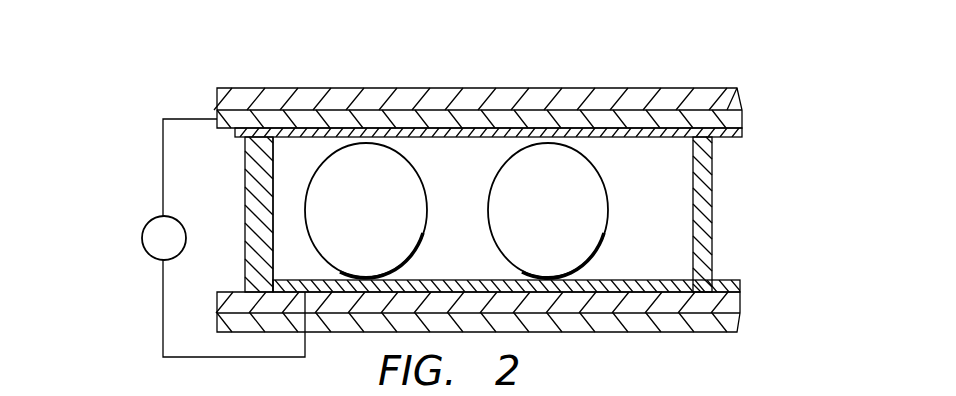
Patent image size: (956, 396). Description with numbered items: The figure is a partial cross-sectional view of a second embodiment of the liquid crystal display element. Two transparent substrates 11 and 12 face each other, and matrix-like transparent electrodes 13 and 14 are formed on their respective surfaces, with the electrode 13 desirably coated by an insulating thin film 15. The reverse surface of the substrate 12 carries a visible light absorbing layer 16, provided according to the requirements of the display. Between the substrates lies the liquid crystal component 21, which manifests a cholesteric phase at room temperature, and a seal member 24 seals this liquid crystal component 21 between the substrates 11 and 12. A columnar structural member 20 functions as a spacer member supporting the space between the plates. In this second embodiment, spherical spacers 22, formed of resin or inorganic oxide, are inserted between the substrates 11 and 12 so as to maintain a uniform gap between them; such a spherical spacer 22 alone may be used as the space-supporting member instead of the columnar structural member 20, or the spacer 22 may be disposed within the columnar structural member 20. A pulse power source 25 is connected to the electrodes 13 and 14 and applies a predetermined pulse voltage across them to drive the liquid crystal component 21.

The transparent substrate 11 is at (502, 82).
The transparent electrode 13 is at (740, 120).
The insulating thin film 15 is at (445, 137).
The transparent electrode 14 is at (660, 282).
The transparent substrate 12 is at (504, 336).
The visible light absorbing layer 16 is at (628, 322).
The seal member 24 is at (250, 183).
The liquid crystal component 21 is at (280, 243).
The columnar structural member 20 is at (712, 210).
The spacer 22 is at (426, 210).
The pulse power source 25 is at (145, 235).